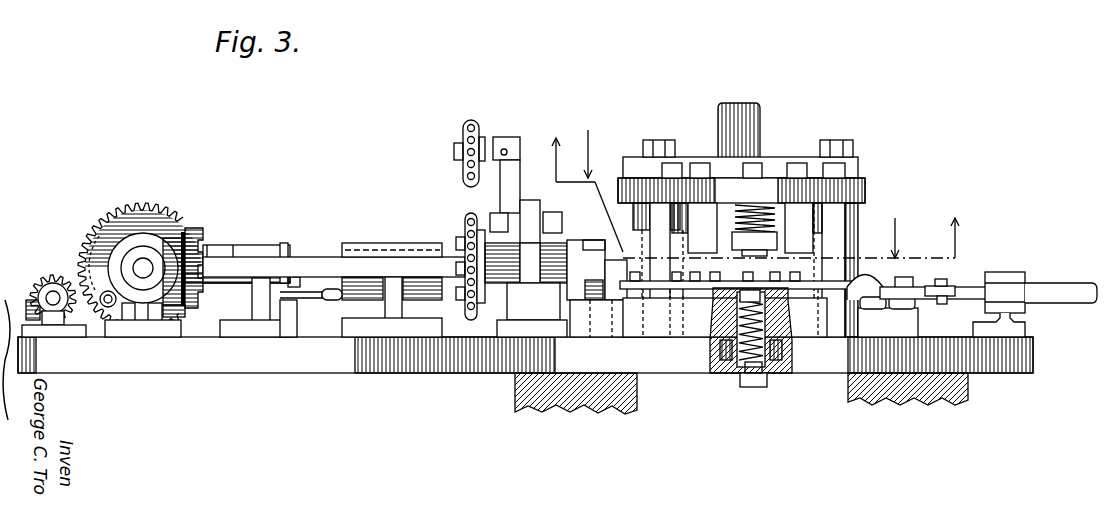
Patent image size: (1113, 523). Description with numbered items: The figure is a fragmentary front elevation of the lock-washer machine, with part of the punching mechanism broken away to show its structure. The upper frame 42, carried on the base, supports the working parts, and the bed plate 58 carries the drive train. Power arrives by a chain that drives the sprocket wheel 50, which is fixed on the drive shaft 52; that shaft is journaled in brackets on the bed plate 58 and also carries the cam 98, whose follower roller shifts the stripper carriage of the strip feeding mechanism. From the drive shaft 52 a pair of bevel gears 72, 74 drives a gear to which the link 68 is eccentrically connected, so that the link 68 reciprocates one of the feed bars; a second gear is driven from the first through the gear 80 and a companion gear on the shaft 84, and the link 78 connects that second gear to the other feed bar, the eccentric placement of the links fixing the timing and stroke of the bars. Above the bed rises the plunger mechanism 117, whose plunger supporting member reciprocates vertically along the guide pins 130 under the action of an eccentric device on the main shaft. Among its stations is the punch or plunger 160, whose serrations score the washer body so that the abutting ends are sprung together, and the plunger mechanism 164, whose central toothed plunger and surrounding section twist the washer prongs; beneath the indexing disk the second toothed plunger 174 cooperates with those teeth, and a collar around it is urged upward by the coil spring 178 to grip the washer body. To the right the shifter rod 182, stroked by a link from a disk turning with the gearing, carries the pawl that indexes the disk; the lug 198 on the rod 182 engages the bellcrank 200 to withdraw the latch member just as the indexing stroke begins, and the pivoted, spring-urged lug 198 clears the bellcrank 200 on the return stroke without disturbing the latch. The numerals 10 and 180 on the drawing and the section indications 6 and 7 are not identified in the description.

The gear 10 is at (112, 235).
The bevel gear 74 is at (148, 258).
The bevel gear 72 is at (186, 246).
The link 78 is at (212, 247).
The gear 80 is at (60, 290).
The shaft 84 is at (50, 298).
The drive shaft 52 is at (355, 265).
The sprocket wheel 50 is at (467, 222).
The link 68 is at (315, 300).
The bed plate 58 is at (410, 360).
The upper frame 42 is at (588, 395).
The cam 98 is at (598, 322).
The plunger mechanism 117 is at (880, 182).
The guide pins 130 is at (652, 240).
The plunger 180 is at (697, 212).
The punch or plunger 160 is at (775, 210).
The plunger mechanism 164 is at (748, 258).
The coil spring 178 is at (738, 365).
The second toothed plunger 174 is at (752, 388).
The bellcrank 200 is at (902, 290).
The lug 198 is at (945, 290).
The shifter rod 182 is at (1045, 290).
The section line 7 is at (752, 188).
The section line 6 is at (769, 188).